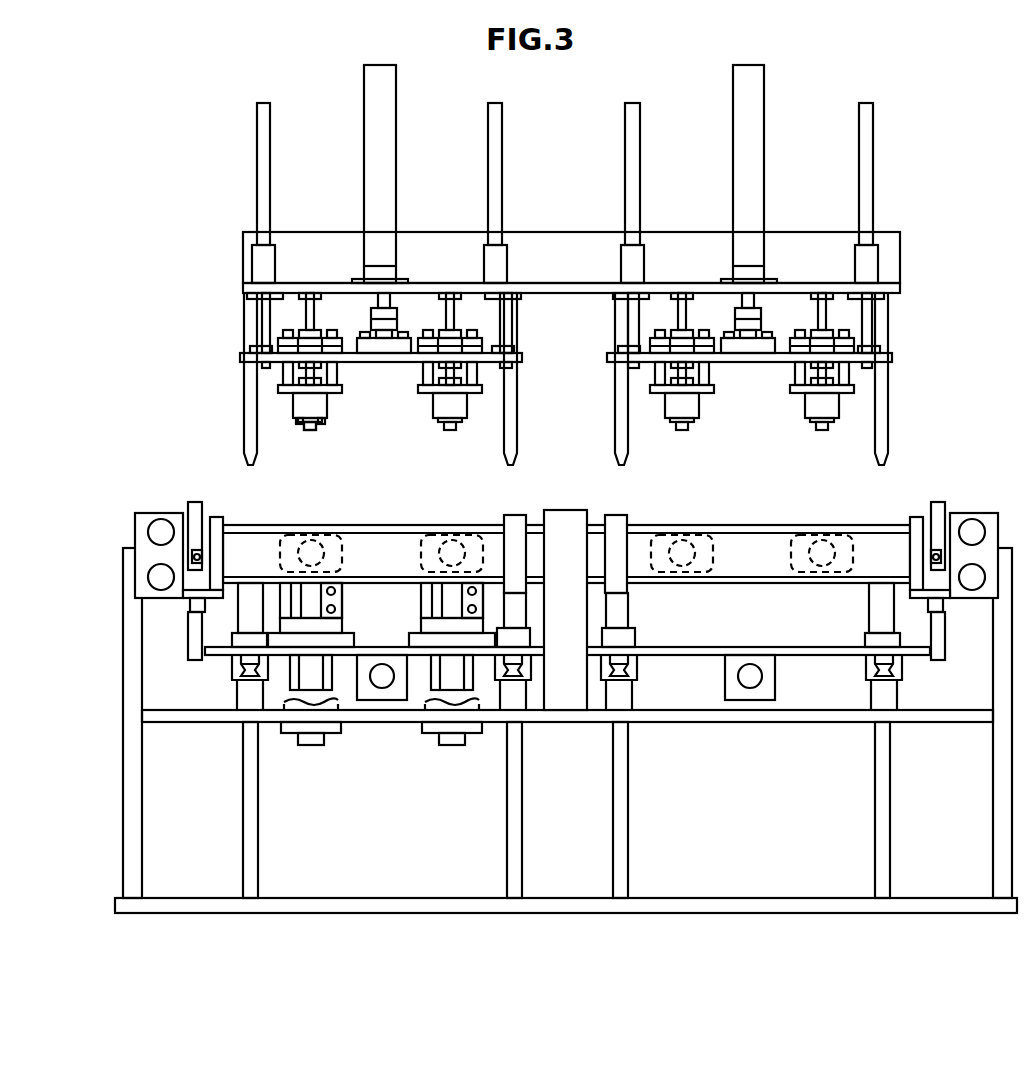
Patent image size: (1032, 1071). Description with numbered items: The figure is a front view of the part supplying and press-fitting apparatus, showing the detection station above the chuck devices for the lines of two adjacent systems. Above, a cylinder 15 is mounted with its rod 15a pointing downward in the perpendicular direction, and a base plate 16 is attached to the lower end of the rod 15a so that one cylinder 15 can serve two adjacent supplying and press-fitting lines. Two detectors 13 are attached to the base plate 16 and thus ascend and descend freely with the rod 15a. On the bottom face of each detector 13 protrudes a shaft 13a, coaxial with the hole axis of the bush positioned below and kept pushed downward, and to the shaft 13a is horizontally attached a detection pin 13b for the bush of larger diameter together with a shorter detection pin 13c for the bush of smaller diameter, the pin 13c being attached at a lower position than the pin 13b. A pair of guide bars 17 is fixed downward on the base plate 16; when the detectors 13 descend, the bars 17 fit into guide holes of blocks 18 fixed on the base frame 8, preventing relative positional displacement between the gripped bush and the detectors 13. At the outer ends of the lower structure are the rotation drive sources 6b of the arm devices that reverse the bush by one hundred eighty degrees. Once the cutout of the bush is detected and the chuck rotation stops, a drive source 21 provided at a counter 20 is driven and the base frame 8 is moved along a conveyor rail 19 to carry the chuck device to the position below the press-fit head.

The cylinder 15 is at (372, 143).
The rod 15a is at (378, 302).
The base plate 16 is at (240, 355).
The guide bars 17 is at (245, 411).
The detector 13 is at (437, 408).
The shaft 13a is at (310, 431).
The detection pin 13b is at (298, 428).
The detection pin 13c is at (320, 428).
The blocks 18 is at (250, 597).
The conveyor rail 19 is at (248, 680).
The counter 20 is at (133, 776).
The drive source 21 is at (372, 687).
The base frame 8 is at (213, 645).
The rotation drive source 6b is at (134, 530).